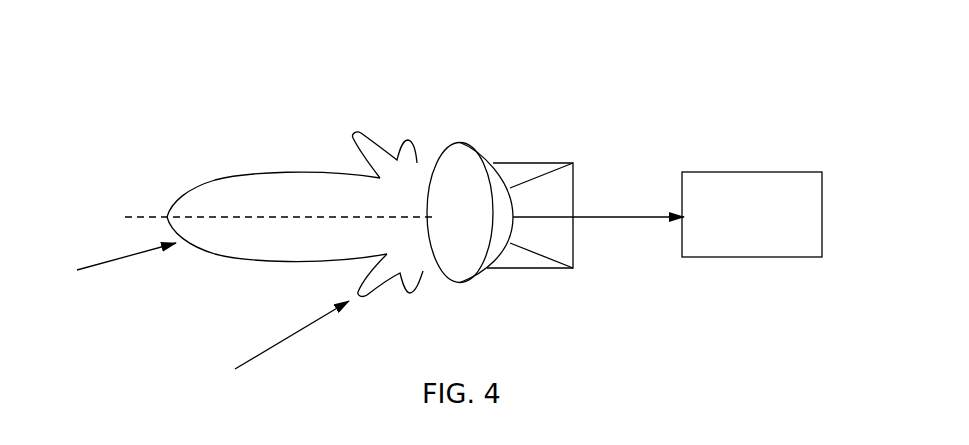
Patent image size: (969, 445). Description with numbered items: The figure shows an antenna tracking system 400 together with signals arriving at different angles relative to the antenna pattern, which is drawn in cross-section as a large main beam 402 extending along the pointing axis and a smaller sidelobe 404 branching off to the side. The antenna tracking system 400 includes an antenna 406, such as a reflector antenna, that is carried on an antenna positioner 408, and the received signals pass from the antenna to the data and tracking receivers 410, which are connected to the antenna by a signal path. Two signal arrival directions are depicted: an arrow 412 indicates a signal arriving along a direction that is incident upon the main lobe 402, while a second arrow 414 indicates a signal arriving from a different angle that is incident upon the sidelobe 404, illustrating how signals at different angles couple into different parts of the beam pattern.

The antenna tracking system 400 is at (652, 58).
The main beam 402 is at (197, 188).
The sidelobe 404 is at (370, 293).
The antenna 406 is at (460, 140).
The antenna positioner 408 is at (553, 270).
The data and tracking receivers 410 is at (760, 172).
The arrow 412 is at (135, 252).
The arrow 414 is at (250, 358).